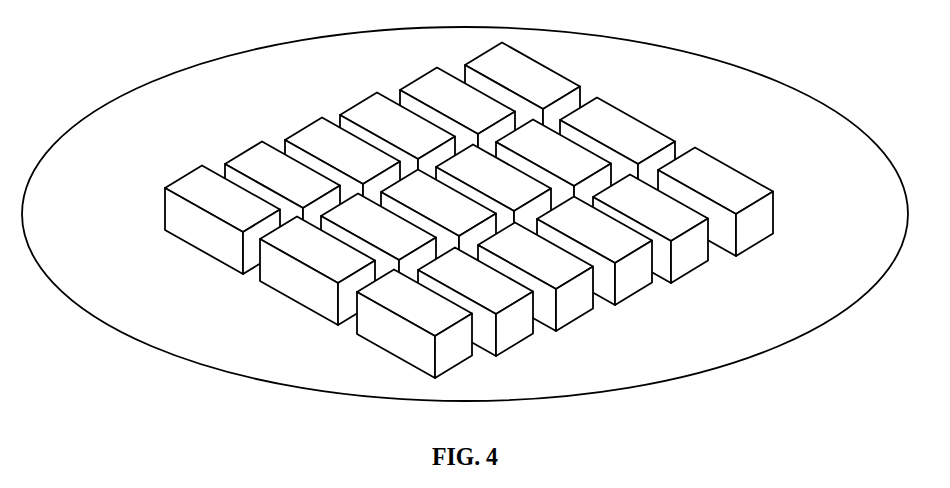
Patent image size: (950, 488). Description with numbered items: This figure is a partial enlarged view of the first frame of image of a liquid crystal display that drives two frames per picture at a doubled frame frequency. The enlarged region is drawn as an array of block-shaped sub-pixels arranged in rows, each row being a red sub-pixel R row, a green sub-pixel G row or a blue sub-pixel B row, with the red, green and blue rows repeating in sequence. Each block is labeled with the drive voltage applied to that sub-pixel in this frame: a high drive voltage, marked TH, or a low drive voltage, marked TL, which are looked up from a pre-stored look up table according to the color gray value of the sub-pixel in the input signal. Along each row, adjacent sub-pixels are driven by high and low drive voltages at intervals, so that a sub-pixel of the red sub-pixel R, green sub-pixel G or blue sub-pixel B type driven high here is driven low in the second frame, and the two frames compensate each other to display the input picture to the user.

The red sub-pixel R is at (246, 125).
The green sub-pixel G is at (321, 99).
The blue sub-pixel B is at (369, 65).